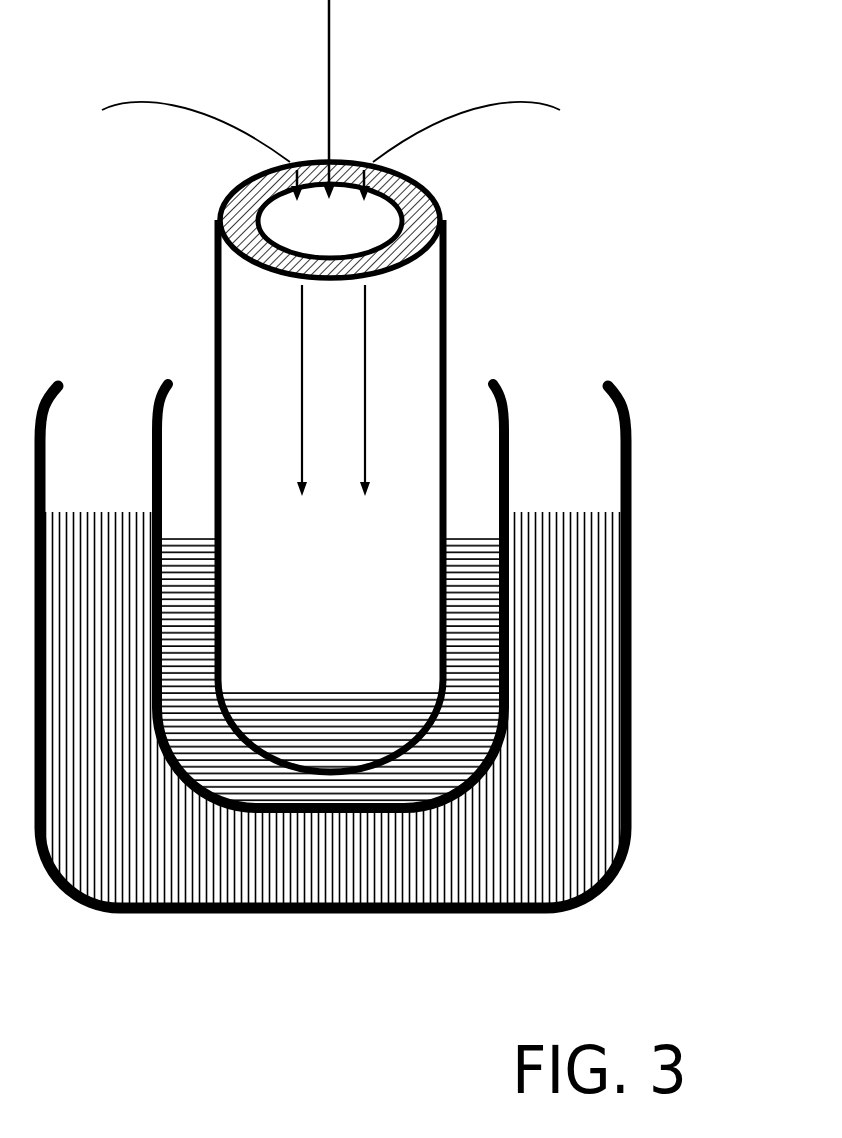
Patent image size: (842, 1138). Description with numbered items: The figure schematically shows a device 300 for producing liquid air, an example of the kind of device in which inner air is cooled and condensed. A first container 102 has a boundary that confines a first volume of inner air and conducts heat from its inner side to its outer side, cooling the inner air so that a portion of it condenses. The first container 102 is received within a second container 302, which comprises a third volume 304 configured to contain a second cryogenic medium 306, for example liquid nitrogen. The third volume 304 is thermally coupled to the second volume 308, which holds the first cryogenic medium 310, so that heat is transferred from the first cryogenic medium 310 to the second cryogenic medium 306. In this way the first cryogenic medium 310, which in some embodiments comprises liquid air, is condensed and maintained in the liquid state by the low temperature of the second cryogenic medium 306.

The device for producing liquid air 300 is at (415, 525).
The first container 102 is at (450, 292).
The second container 302 is at (630, 585).
The third volume 304 is at (570, 467).
The second cryogenic medium 306 is at (570, 770).
The second volume 308 is at (187, 462).
The first cryogenic medium 310 is at (218, 770).